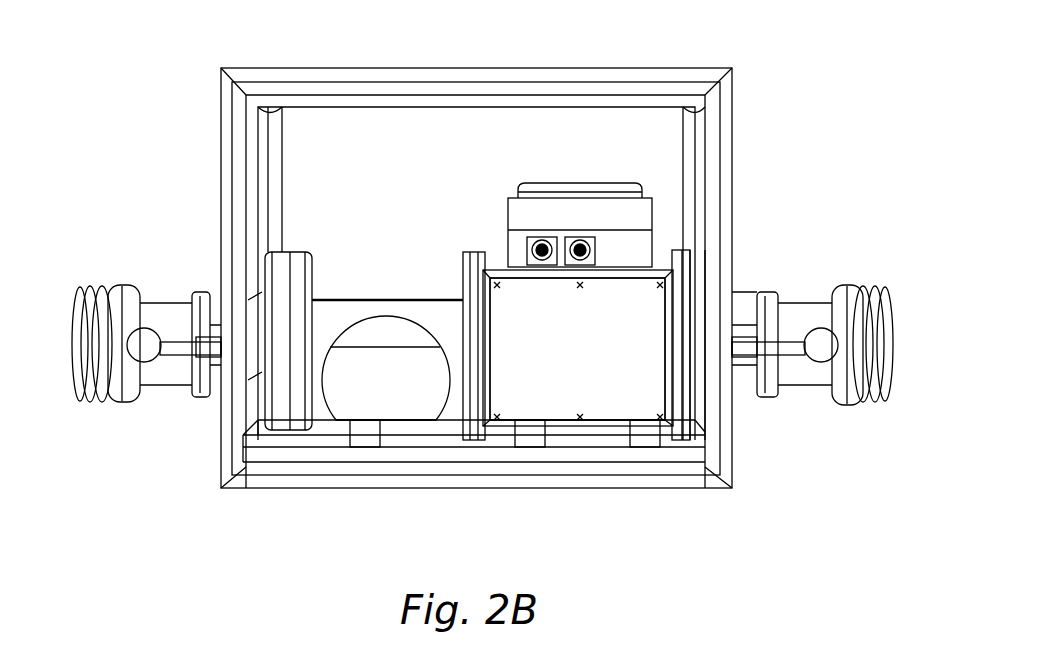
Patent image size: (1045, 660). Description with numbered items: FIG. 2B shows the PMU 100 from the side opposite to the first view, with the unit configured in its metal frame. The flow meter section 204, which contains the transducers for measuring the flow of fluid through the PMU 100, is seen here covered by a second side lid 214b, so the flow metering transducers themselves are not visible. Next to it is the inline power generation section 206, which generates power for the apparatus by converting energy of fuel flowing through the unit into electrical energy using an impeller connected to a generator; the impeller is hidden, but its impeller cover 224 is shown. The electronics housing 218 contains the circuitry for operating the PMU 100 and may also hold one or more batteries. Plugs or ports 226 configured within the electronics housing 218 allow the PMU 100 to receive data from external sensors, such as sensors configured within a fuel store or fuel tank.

The PMU 100 is at (482, 280).
The flow meter section 204 is at (643, 365).
The inline power generation section 206 is at (338, 291).
The second side lid 214b is at (620, 388).
The electronics housing 218 is at (640, 228).
The impeller cover 224 is at (376, 425).
The plugs (or ports) 226 is at (566, 232).